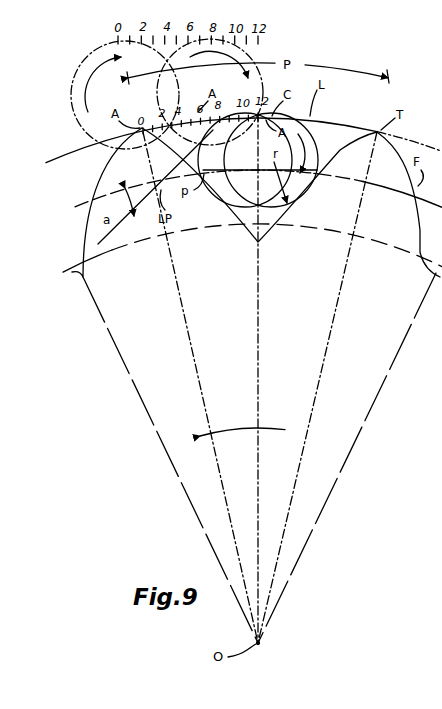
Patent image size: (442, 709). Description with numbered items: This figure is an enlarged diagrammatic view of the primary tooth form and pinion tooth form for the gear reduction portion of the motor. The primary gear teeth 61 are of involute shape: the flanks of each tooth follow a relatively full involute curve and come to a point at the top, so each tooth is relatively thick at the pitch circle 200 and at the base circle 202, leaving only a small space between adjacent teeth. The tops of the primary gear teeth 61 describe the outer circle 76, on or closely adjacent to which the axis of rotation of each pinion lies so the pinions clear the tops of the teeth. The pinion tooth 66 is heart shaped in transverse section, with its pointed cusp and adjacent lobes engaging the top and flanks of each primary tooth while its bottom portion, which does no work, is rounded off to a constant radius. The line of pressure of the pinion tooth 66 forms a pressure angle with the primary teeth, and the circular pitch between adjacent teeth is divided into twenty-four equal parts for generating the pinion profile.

The primary gear teeth 61 is at (90, 214).
The eccentric tooth portion 66 is at (90, 60).
The outer circle 76 is at (426, 146).
The pitch circle 200 is at (388, 190).
The base circle 202 is at (308, 228).